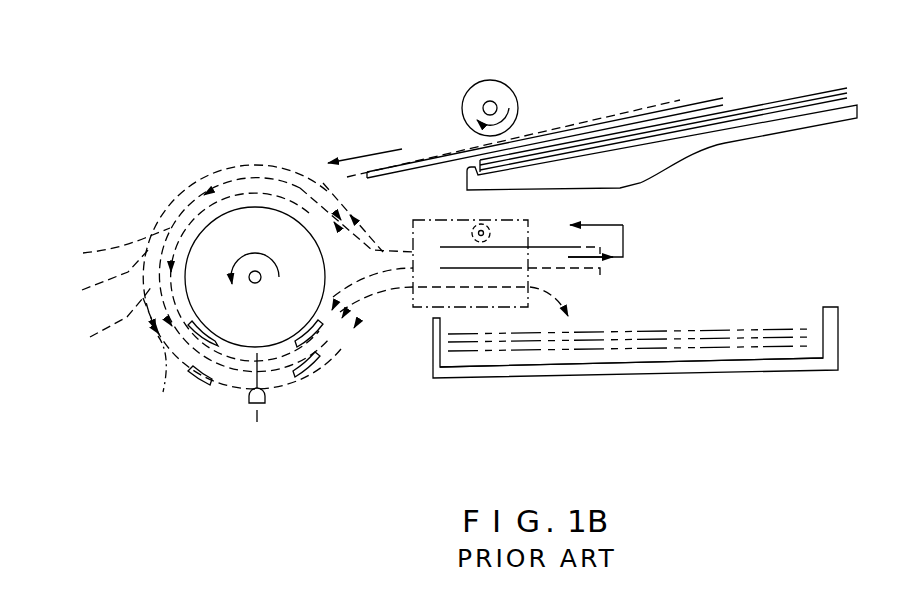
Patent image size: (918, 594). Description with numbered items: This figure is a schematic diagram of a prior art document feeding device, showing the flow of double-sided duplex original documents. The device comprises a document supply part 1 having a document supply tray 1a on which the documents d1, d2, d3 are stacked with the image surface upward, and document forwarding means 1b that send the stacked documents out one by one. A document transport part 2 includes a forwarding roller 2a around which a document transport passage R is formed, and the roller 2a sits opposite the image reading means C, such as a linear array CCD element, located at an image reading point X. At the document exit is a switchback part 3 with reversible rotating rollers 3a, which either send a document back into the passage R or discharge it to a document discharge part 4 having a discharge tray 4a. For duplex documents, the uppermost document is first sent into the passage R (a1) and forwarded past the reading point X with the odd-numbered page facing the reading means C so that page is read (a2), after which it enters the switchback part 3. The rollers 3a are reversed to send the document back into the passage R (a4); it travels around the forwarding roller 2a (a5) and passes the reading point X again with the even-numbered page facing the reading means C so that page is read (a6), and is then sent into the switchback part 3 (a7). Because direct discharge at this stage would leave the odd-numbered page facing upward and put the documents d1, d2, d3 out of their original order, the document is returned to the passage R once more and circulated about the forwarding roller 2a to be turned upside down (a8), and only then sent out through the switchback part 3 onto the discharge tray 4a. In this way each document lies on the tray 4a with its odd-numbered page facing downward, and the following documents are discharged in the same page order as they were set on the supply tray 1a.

The document supply part 1 is at (606, 93).
The document supply tray 1a is at (643, 157).
The document forwarding means 1b is at (503, 100).
The first document d1 is at (683, 103).
The second document d2 is at (767, 100).
The third document d3 is at (814, 97).
The document transport part 2 is at (157, 168).
The forwarding roller 2a is at (236, 228).
The document transport passage R is at (122, 219).
The first document movement a1 is at (98, 275).
The odd-page reading movement a2 is at (292, 348).
The switchback return movement a4 is at (625, 240).
The roller circulating movement a5 is at (106, 318).
The even-page reading movement a6 is at (144, 378).
The second switchback entry movement a7 is at (538, 253).
The turn-over circulating movement a8 is at (108, 246).
The switchback part 3 is at (415, 318).
The reversible rotating rollers 3a is at (456, 218).
The document discharge part 4 is at (704, 322).
The discharge tray 4a is at (603, 368).
The image reading means C is at (250, 405).
The image reading point X is at (258, 436).